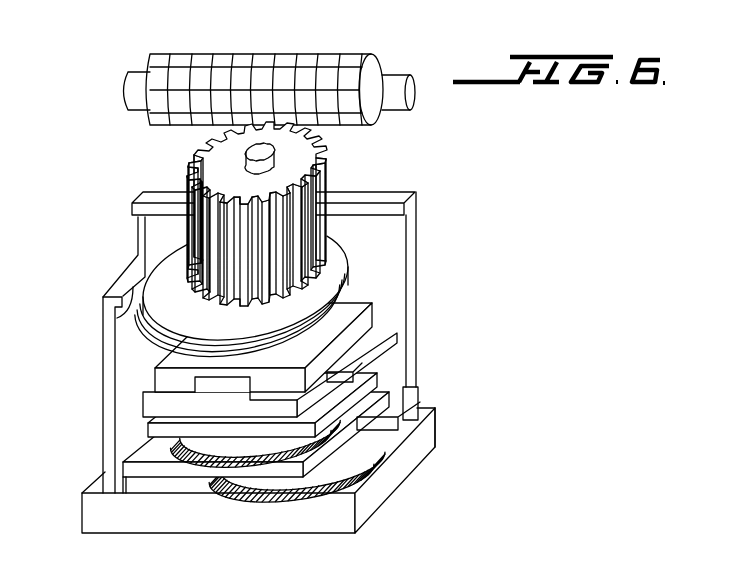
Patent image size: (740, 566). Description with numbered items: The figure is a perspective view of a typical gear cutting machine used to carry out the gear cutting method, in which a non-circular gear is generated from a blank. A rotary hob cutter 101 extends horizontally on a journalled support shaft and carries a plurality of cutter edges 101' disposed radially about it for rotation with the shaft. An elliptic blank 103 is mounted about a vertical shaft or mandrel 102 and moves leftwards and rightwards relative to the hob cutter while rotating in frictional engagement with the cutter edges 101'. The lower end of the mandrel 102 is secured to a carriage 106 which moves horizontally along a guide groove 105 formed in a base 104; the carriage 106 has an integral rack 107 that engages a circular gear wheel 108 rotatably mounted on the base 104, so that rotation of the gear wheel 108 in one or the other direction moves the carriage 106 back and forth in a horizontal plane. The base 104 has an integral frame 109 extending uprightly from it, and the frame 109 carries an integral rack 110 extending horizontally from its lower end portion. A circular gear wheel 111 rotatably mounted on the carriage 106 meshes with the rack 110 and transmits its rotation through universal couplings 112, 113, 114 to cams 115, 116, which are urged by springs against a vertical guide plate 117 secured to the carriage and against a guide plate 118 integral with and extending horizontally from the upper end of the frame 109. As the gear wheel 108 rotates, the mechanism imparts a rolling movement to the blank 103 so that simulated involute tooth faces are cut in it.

The rotary hob cutter 101 is at (254, 63).
The cutter edges 101' is at (394, 61).
The vertical shaft or mandrel 102 is at (323, 139).
The elliptic blank 103 is at (197, 152).
The base 104 is at (408, 475).
The guide groove 105 is at (437, 430).
The carriage 106 is at (417, 402).
The rack 107 is at (387, 428).
The circular gear wheel 108 is at (357, 483).
The frame 109 is at (418, 246).
The rack 110 is at (385, 390).
The circular gear wheel 111 is at (245, 457).
The universal coupling 112 is at (397, 340).
The universal coupling 113 is at (377, 323).
The universal coupling 114 is at (370, 305).
The cam 115 is at (345, 296).
The cam 116 is at (345, 261).
The vertical guide plate 117 is at (120, 312).
The guide plate 118 is at (385, 223).